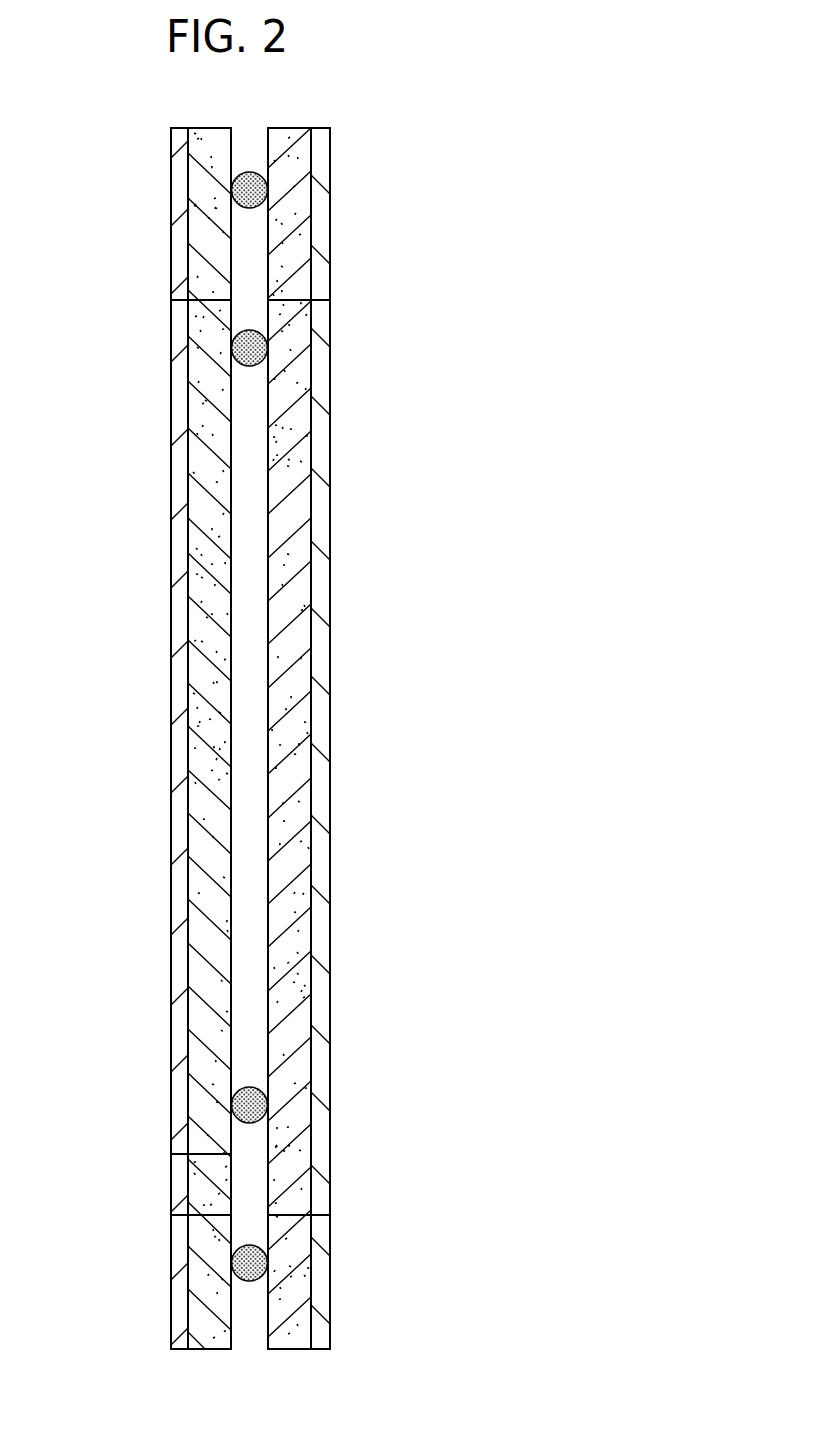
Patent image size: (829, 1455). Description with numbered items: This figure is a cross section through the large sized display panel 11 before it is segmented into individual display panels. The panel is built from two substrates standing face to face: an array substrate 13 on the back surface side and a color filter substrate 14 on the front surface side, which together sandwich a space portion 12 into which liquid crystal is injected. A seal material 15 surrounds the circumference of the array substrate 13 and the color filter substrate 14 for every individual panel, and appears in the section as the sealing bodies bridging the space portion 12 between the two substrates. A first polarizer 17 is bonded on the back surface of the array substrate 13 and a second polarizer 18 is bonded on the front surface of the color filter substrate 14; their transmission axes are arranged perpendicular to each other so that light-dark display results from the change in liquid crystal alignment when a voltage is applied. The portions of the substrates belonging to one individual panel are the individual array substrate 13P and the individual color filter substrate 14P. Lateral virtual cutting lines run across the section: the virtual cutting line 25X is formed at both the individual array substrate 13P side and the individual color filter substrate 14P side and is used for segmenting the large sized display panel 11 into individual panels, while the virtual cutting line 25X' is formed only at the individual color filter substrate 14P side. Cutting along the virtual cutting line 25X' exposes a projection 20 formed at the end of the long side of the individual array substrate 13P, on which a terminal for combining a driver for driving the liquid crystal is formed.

The large sized display panel 11 is at (157, 157).
The space portion 12 is at (250, 452).
The array substrate 13 is at (293, 212).
The individual array substrate 13P is at (293, 488).
The color filter substrate 14 is at (211, 227).
The individual color filter substrate 14P is at (213, 551).
The seal material 15 is at (237, 357).
The first polarizer 17 is at (320, 574).
The second polarizer 18 is at (180, 668).
The projection 20 is at (267, 1177).
The virtual cutting line 25X is at (249, 758).
The virtual cutting line 25X' is at (148, 1153).